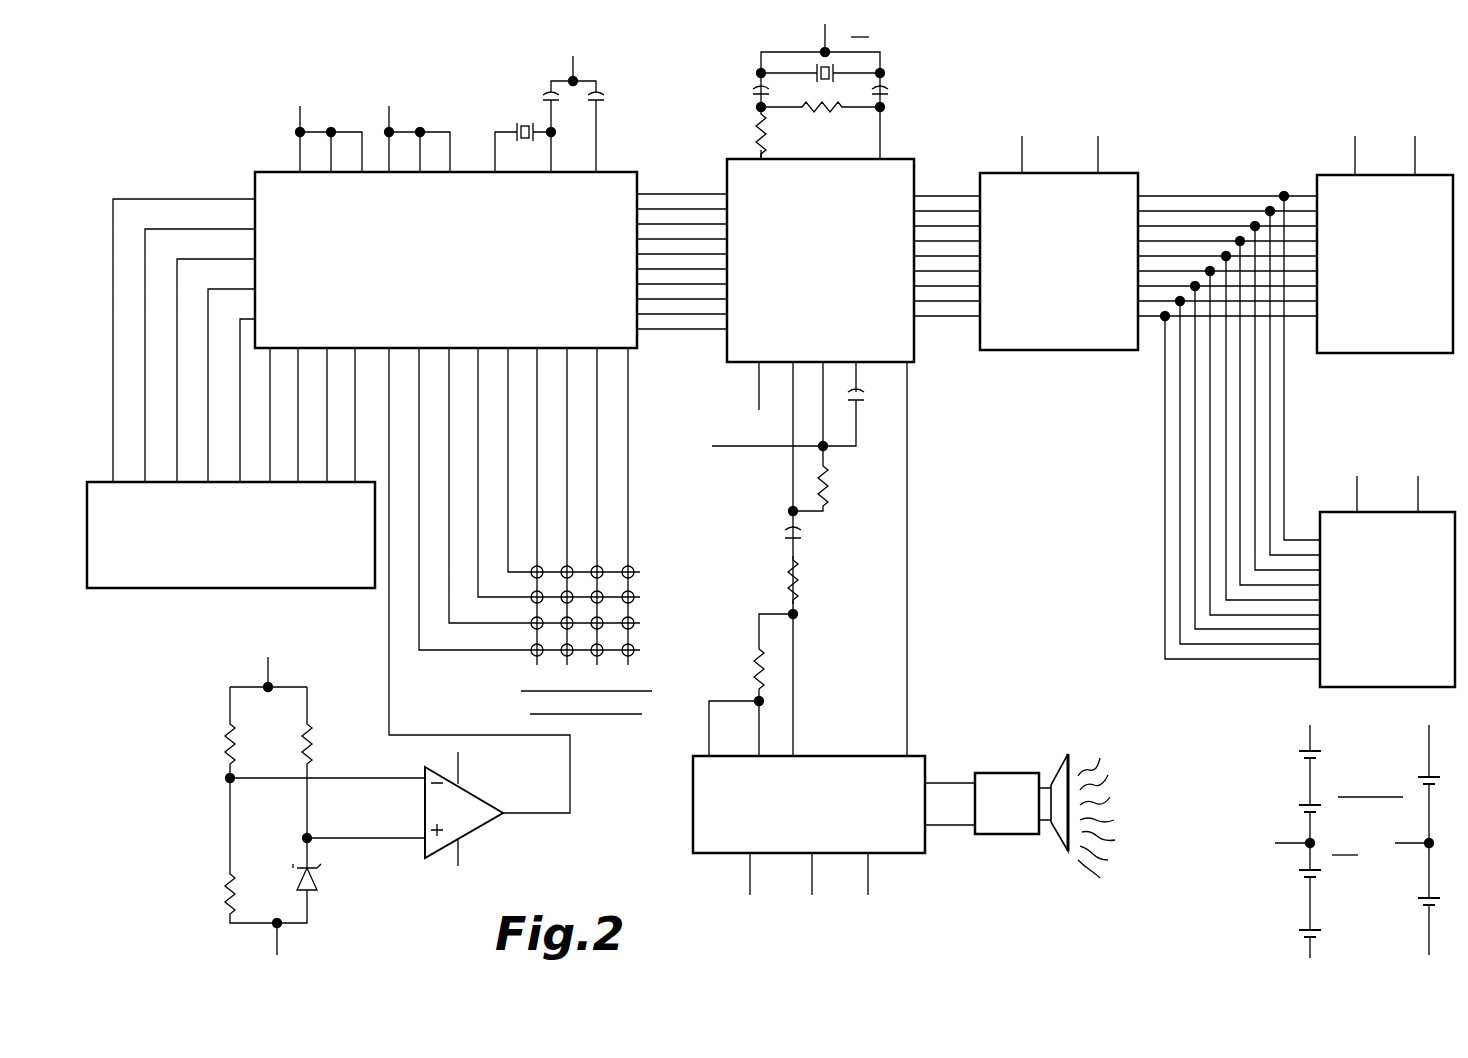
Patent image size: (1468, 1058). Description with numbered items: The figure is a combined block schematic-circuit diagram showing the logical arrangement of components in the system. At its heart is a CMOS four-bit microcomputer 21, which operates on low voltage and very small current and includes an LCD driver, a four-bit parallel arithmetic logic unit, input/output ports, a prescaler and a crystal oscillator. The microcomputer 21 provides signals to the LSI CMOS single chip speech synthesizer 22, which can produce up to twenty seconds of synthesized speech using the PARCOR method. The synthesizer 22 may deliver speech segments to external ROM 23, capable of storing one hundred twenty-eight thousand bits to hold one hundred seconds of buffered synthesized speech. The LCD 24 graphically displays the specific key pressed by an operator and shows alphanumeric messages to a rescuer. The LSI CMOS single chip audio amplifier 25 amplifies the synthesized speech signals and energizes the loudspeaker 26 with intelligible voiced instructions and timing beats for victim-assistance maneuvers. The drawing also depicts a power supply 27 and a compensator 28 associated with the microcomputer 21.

The microcomputer 21 is at (436, 241).
The single chip speech synthesizer 22 is at (833, 201).
The external ROM 23 is at (1047, 215).
The LCD 24 is at (243, 522).
The single chip audio amplifier 25 is at (828, 795).
The loudspeaker 26 is at (1095, 877).
The power supply 27 is at (1383, 766).
The compensator 28 is at (660, 858).